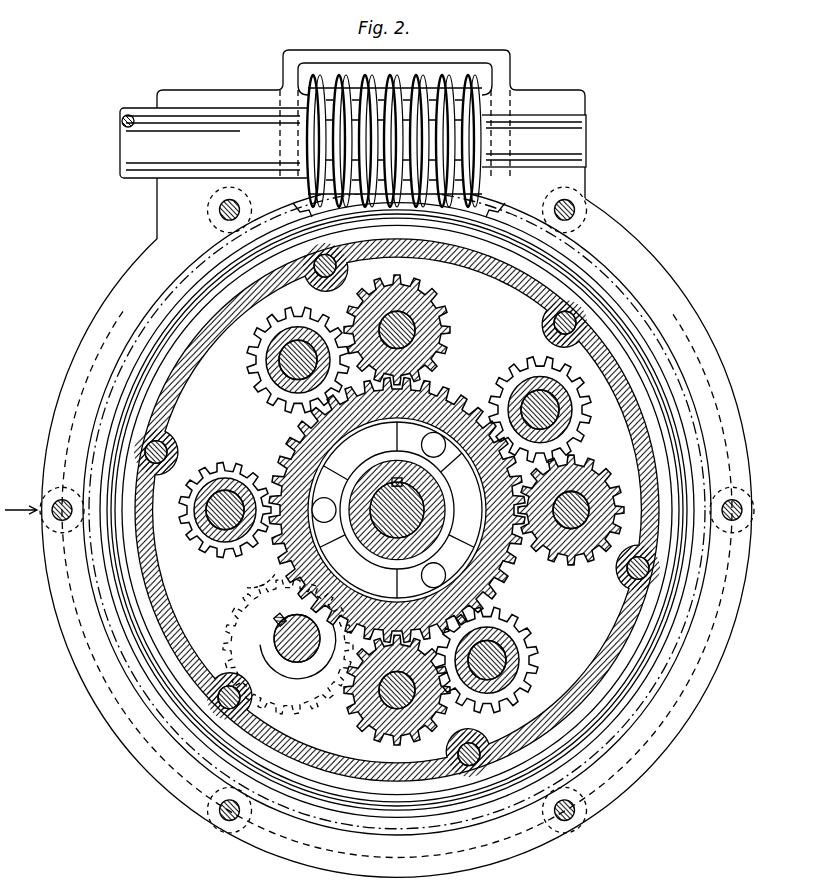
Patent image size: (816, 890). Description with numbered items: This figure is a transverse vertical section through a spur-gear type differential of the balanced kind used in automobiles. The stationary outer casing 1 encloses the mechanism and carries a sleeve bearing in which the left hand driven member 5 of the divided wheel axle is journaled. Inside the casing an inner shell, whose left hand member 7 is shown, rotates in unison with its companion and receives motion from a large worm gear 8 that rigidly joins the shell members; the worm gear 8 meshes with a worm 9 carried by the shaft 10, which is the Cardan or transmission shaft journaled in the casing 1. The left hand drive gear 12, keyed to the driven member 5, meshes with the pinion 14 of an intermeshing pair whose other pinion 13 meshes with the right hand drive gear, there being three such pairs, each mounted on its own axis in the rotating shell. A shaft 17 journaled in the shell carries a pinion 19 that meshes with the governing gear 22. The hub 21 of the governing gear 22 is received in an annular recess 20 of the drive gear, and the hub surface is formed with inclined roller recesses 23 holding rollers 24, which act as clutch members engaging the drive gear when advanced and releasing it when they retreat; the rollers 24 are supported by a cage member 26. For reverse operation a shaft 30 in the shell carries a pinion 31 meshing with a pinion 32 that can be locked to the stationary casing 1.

The stationary outer casing 1 is at (379, 531).
The left hand driven member 5 is at (411, 508).
The left hand inner shell member 7 is at (397, 510).
The worm gear 8 is at (297, 208).
The worm 9 is at (476, 78).
The shaft 10 is at (140, 106).
The left hand drive gear 12 is at (397, 510).
The pinion 13 is at (404, 510).
The pinion 14 is at (474, 510).
The shaft 17 is at (225, 494).
The pinion 19 is at (202, 583).
The annular recess 20 is at (397, 520).
The hub 21 is at (397, 510).
The governing gear 22 is at (274, 441).
The inclined roller recess 23 is at (387, 509).
The roller 24 is at (397, 510).
The cage member 26 is at (512, 583).
The shaft 30 is at (293, 635).
The pinion 31 is at (273, 646).
The pinion 32 is at (252, 580).